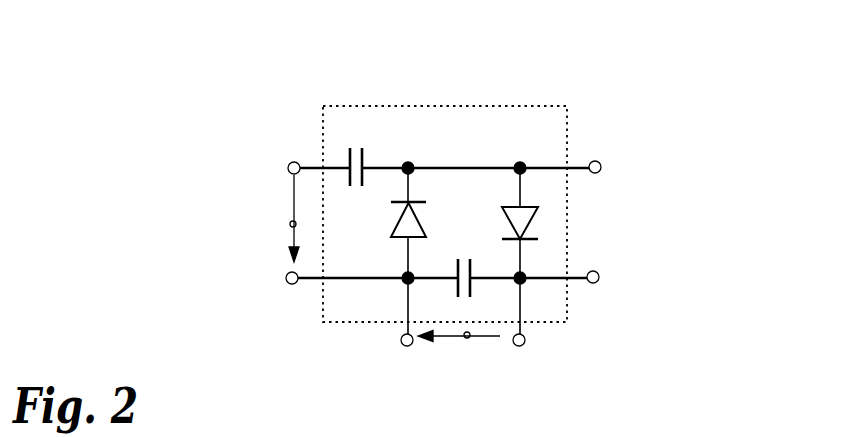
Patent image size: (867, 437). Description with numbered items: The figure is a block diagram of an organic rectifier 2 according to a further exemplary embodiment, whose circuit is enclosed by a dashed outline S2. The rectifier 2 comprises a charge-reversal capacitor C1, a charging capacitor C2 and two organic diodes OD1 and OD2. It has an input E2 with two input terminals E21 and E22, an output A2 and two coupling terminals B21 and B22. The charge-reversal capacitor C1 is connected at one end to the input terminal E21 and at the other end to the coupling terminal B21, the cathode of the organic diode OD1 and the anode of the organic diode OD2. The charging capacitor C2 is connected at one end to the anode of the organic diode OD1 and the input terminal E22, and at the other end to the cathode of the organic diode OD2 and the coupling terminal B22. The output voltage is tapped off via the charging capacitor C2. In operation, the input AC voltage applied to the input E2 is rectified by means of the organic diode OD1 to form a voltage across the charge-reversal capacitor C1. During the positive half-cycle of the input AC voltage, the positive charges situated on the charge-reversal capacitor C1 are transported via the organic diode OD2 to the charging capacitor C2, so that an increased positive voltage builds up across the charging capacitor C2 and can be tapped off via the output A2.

The rectifier 2 is at (605, 98).
The switching/coupling circuit S2 is at (478, 104).
The input terminal E21 is at (288, 166).
The input E2 is at (290, 225).
The input terminal E22 is at (290, 285).
The coupling terminal B21 is at (602, 172).
The coupling terminal B22 is at (600, 282).
The output A2 is at (468, 338).
The charge-reversal capacitor C1 is at (444, 155).
The charging capacitor C2 is at (442, 291).
The organic diode OD1 is at (379, 257).
The organic diode OD2 is at (485, 257).